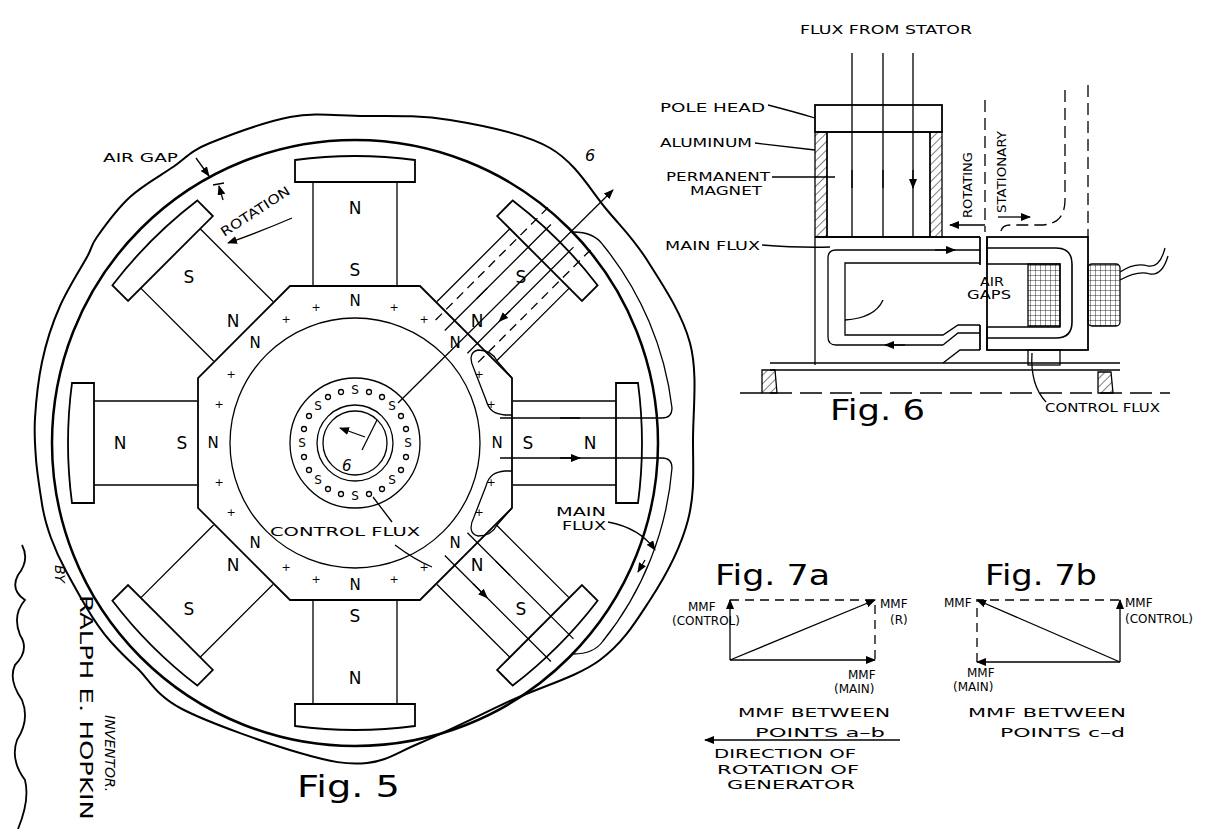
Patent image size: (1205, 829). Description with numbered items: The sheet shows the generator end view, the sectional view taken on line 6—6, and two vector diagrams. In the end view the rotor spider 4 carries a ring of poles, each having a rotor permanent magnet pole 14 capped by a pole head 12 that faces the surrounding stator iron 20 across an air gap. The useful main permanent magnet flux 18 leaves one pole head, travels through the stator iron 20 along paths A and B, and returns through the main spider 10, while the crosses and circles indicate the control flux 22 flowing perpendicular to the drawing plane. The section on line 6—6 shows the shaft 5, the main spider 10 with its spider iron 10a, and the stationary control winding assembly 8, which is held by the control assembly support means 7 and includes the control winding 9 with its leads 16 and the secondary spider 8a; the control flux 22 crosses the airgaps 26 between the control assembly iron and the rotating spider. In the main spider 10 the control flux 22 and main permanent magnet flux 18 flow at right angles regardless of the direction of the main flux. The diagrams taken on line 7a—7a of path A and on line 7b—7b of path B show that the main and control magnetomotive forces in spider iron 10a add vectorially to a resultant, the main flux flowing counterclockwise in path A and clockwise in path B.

In FIG. 5, the spider 4 is at (410, 280).
In FIG. 6, the shaft 5 is at (1110, 385).
In FIG. 5, the section line 6— 6 is at (399, 212).
In FIG. 6, the section line 6— 6 is at (822, 165).
In FIG. 6, the control assembly support means 7 is at (1090, 157).
In FIG. 5, the section line 7a— 7a is at (459, 399).
In FIG. 5, the section line 7b— 7b is at (462, 498).
In FIG. 6, the control winding assembly 8 is at (1090, 238).
In FIG. 6, the secondary spider 8a is at (1038, 355).
In FIG. 6, the control winding 9 is at (1121, 301).
In FIG. 5, the main spider 10 is at (505, 499).
In FIG. 6, the main spider 10 is at (815, 312).
In FIG. 6, the spider iron 10a is at (822, 270).
In FIG. 5, the pole head 12 is at (530, 228).
In FIG. 6, the pole head 12 is at (836, 105).
In FIG. 5, the rotor permanent magnet pole 14 is at (528, 324).
In FIG. 6, the rotor permanent magnet pole 14 is at (835, 206).
In FIG. 5, the leads 16 is at (217, 177).
In FIG. 6, the leads 16 is at (1170, 262).
In FIG. 5, the main permanent magnet flux 18 is at (672, 392).
In FIG. 6, the main permanent magnet flux 18 is at (852, 67).
In FIG. 5, the stator iron 20 is at (484, 163).
In FIG. 6, the control flux 22 is at (1074, 337).
In FIG. 6, the airgaps 26 is at (983, 324).